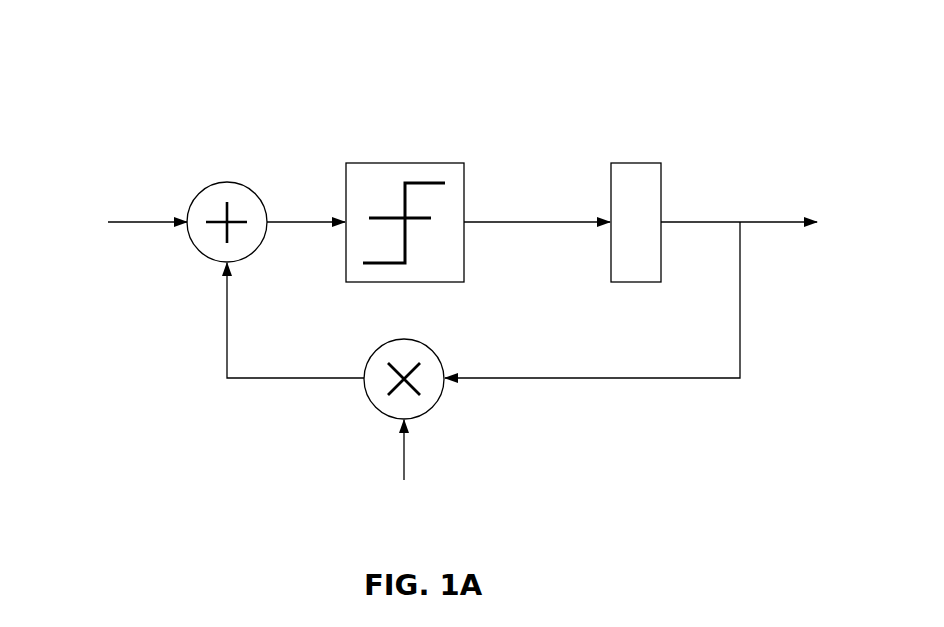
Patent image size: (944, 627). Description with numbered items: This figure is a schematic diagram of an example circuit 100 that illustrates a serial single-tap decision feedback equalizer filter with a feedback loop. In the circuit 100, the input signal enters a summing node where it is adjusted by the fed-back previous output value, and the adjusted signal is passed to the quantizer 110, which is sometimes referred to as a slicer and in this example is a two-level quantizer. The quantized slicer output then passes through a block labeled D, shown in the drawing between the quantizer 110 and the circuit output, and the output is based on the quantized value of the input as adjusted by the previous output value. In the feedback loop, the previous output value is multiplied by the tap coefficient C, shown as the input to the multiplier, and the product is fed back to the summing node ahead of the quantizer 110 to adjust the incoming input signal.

The circuit 100 is at (220, 118).
The quantizer 110 is at (455, 172).
The delay element D is at (636, 222).
The tap coefficient C is at (404, 466).